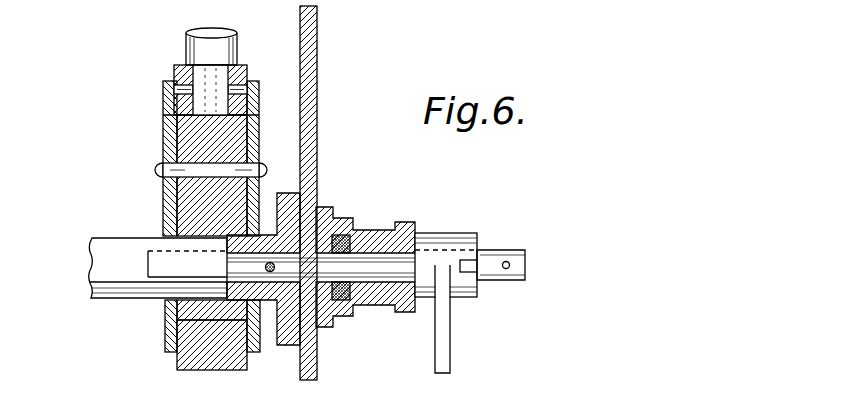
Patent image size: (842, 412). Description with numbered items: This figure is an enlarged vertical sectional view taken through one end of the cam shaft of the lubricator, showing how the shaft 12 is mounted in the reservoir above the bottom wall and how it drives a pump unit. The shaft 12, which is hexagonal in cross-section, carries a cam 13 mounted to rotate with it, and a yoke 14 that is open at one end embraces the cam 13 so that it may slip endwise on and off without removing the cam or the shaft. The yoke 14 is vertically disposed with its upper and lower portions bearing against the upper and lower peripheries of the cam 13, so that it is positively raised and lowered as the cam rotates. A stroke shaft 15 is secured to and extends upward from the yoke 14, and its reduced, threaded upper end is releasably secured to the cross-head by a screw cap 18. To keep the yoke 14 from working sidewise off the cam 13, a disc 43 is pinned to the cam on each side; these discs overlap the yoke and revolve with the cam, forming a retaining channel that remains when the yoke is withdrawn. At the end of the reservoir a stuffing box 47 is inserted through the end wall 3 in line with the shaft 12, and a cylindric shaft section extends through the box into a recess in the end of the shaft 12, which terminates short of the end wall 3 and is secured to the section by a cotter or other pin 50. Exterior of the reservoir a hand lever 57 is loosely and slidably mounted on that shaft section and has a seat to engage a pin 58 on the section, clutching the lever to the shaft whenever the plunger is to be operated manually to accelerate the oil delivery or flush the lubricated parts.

The end wall 3 is at (317, 78).
The shaft 12 is at (107, 258).
The cam 13 is at (163, 208).
The yoke 14 is at (243, 69).
The stroke shaft 15 is at (192, 49).
The screw cap 18 is at (363, 268).
The disc 43 is at (163, 127).
The stuffing box 47 is at (361, 216).
The pin 50 is at (270, 275).
The hand lever 57 is at (443, 345).
The pin 58 is at (507, 258).